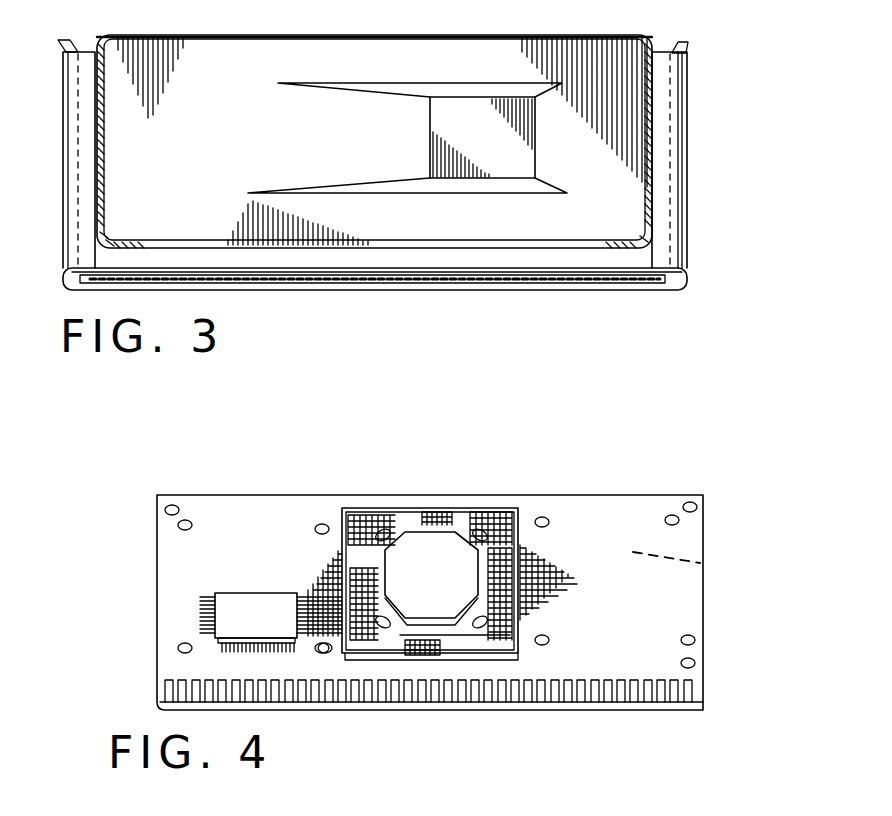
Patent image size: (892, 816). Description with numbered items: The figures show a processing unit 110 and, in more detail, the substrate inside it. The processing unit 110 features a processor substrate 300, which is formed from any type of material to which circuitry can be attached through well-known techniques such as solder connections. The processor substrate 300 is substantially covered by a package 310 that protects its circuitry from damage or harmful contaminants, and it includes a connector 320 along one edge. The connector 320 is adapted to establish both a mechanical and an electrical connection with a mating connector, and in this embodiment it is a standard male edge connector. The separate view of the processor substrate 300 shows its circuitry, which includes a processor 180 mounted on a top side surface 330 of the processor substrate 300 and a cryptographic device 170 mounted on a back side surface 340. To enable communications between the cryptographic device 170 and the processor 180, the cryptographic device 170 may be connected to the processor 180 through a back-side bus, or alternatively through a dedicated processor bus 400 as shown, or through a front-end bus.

In FIG. 3, the processing unit 110 is at (693, 138).
In FIG. 3, the processor substrate 300 is at (585, 283).
In FIG. 4, the processor substrate 300 is at (153, 590).
In FIG. 3, the package 310 is at (258, 148).
In FIG. 3, the connector 320 is at (326, 284).
In FIG. 4, the cryptographic device 170 is at (233, 615).
In FIG. 4, the processor 180 is at (434, 557).
In FIG. 4, the top side surface 330 is at (635, 618).
In FIG. 4, the back side surface 340 is at (703, 565).
In FIG. 4, the dedicated processor bus 400 is at (325, 634).